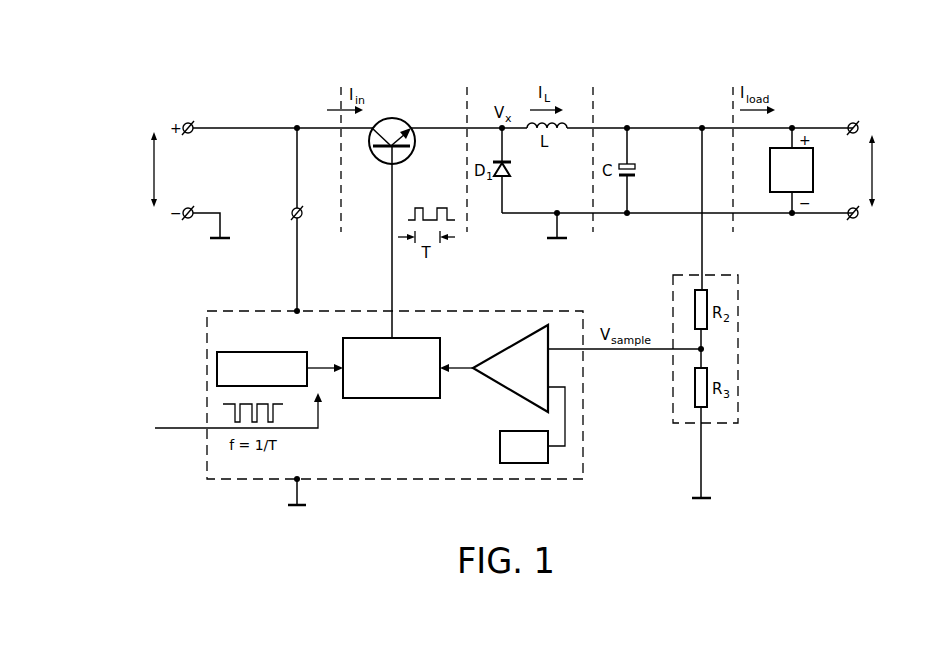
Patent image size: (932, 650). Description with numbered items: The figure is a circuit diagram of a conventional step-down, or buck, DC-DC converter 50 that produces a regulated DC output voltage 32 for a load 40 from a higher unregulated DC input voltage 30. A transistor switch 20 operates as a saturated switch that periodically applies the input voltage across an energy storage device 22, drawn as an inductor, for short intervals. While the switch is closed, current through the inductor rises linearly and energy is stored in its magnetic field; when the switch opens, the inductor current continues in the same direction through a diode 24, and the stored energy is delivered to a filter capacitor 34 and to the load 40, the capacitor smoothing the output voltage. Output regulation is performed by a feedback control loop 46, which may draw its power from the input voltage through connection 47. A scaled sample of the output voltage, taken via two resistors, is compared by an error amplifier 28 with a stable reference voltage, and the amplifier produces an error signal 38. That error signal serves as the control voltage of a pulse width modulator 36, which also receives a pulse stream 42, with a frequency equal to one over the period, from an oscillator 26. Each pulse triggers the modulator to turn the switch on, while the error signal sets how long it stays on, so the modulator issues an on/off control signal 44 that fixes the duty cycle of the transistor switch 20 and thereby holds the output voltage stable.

The step-down DC-DC converter 50 is at (94, 70).
The DC input voltage 30 is at (153, 150).
The DC output voltage 32 is at (875, 149).
The transistor switch 20 is at (390, 118).
The energy storage device 22 is at (567, 131).
The diode 24 is at (510, 168).
The filter capacitor 34 is at (636, 169).
The load 40 is at (814, 170).
The on/off control signal 44 is at (391, 275).
The connection 47 is at (296, 166).
The feedback control loop 46 is at (583, 410).
The oscillator 26 is at (256, 351).
The pulse width modulator 36 is at (392, 399).
The error signal 38 is at (462, 394).
The error amplifier 28 is at (508, 353).
The pulse stream 42 is at (168, 427).